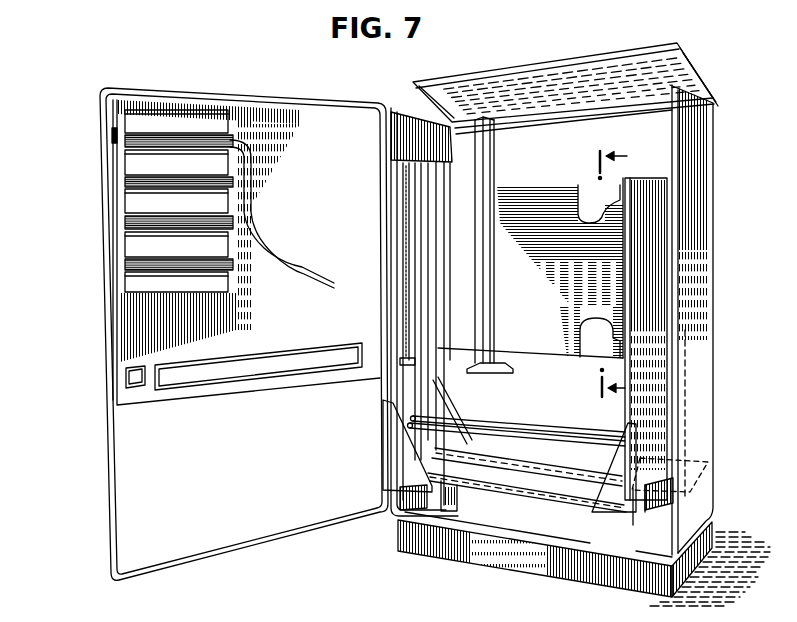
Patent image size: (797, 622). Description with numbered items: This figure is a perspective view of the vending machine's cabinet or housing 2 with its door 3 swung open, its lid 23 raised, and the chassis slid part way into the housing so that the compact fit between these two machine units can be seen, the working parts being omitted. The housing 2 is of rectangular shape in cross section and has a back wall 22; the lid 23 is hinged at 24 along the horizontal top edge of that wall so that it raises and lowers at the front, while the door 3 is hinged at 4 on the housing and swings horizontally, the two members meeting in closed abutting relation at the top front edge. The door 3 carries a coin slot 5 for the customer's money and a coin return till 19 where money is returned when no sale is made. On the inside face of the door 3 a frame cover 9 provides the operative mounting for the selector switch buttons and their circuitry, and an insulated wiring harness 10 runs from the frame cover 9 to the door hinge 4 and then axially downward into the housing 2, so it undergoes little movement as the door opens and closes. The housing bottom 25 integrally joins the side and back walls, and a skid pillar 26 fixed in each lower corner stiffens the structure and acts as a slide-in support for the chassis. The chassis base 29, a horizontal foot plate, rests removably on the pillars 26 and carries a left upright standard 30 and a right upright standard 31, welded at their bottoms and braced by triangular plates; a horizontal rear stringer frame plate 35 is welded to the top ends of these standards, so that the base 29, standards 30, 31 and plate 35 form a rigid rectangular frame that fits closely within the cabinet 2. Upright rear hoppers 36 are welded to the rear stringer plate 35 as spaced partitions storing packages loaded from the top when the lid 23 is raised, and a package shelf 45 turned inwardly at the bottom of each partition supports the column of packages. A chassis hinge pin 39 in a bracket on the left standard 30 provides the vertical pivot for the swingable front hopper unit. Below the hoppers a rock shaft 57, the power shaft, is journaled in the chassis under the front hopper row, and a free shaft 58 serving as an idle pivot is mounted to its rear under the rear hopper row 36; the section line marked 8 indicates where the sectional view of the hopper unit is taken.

The housing 2 is at (697, 163).
The door 3 is at (257, 113).
The door hinge 4 is at (395, 113).
The coin slot 5 is at (112, 136).
The section line 8- 8 is at (612, 274).
The frame cover 9 is at (158, 118).
The wiring harness 10 is at (268, 256).
The coin return till 19 is at (125, 376).
The back wall 22 is at (652, 128).
The lid 23 is at (562, 62).
The lid hinge 24 is at (713, 106).
The housing bottom 25 is at (530, 525).
The skid pillar 26 is at (440, 497).
The chassis base 29 is at (526, 492).
The left upright standard 30 is at (390, 245).
The right upright standard 31 is at (652, 259).
The rear stringer frame plate 35 is at (552, 200).
The rear hopper 36 is at (490, 141).
The chassis hinge pin 39 is at (392, 377).
The package shelf 45 is at (502, 364).
The rock shaft 57 is at (485, 437).
The free shaft 58 is at (552, 413).